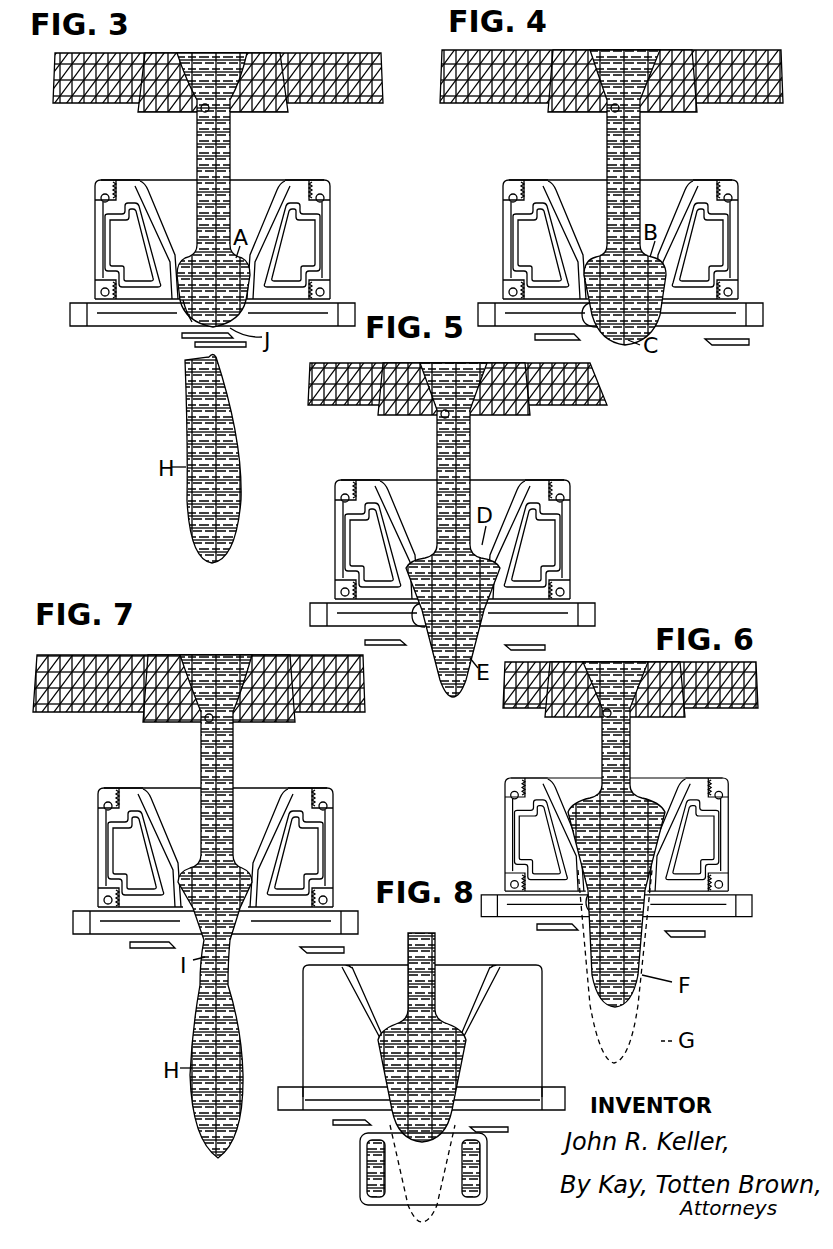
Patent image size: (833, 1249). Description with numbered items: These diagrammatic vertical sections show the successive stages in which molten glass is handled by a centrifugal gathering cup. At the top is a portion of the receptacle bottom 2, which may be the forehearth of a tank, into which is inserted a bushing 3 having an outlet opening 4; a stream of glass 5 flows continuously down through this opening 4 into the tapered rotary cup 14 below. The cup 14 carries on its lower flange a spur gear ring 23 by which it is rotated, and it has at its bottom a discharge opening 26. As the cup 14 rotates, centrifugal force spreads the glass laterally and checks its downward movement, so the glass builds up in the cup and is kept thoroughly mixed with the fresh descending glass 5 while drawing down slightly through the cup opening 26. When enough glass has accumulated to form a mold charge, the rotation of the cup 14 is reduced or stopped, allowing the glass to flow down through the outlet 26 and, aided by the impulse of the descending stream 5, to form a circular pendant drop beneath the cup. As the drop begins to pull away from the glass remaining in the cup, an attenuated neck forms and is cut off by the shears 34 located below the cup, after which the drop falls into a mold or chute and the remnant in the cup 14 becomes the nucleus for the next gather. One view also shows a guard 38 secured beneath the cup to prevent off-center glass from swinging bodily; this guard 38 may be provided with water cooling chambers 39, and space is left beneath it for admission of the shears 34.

In FIG. 3, the receptacle bottom 2 is at (371, 96).
In FIG. 4, the receptacle bottom 2 is at (760, 98).
In FIG. 5, the receptacle bottom 2 is at (585, 398).
In FIG. 7, the receptacle bottom 2 is at (335, 708).
In FIG. 6, the receptacle bottom 2 is at (750, 700).
In FIG. 3, the bushing 3 is at (280, 112).
In FIG. 4, the bushing 3 is at (688, 110).
In FIG. 5, the bushing 3 is at (513, 412).
In FIG. 7, the bushing 3 is at (275, 722).
In FIG. 6, the bushing 3 is at (680, 713).
In FIG. 3, the outlet opening 4 is at (201, 110).
In FIG. 4, the outlet opening 4 is at (611, 110).
In FIG. 5, the outlet opening 4 is at (441, 417).
In FIG. 7, the outlet opening 4 is at (206, 722).
In FIG. 6, the outlet opening 4 is at (605, 717).
In FIG. 3, the stream of glass 5 is at (232, 147).
In FIG. 4, the stream of glass 5 is at (641, 148).
In FIG. 5, the stream of glass 5 is at (471, 450).
In FIG. 7, the stream of glass 5 is at (236, 760).
In FIG. 6, the stream of glass 5 is at (633, 751).
In FIG. 8, the stream of glass 5 is at (436, 948).
In FIG. 3, the rotary cup 14 is at (152, 205).
In FIG. 4, the rotary cup 14 is at (555, 205).
In FIG. 5, the rotary cup 14 is at (385, 508).
In FIG. 7, the rotary cup 14 is at (150, 813).
In FIG. 6, the rotary cup 14 is at (555, 805).
In FIG. 8, the rotary cup 14 is at (528, 1030).
In FIG. 3, the spur gear ring 23 is at (74, 313).
In FIG. 4, the spur gear ring 23 is at (490, 305).
In FIG. 5, the spur gear ring 23 is at (597, 608).
In FIG. 7, the spur gear ring 23 is at (74, 920).
In FIG. 6, the spur gear ring 23 is at (755, 903).
In FIG. 8, the spur gear ring 23 is at (560, 1095).
In FIG. 3, the discharge opening 26 is at (187, 302).
In FIG. 4, the discharge opening 26 is at (592, 312).
In FIG. 5, the discharge opening 26 is at (419, 632).
In FIG. 6, the discharge opening 26 is at (592, 902).
In FIG. 3, the shears 34 is at (204, 349).
In FIG. 4, the shears 34 is at (556, 336).
In FIG. 5, the shears 34 is at (385, 645).
In FIG. 7, the shears 34 is at (145, 948).
In FIG. 6, the shears 34 is at (555, 935).
In FIG. 8, the shears 34 is at (333, 1124).
In FIG. 8, the guard 38 is at (362, 1160).
In FIG. 8, the water cooling chambers 39 is at (372, 1173).